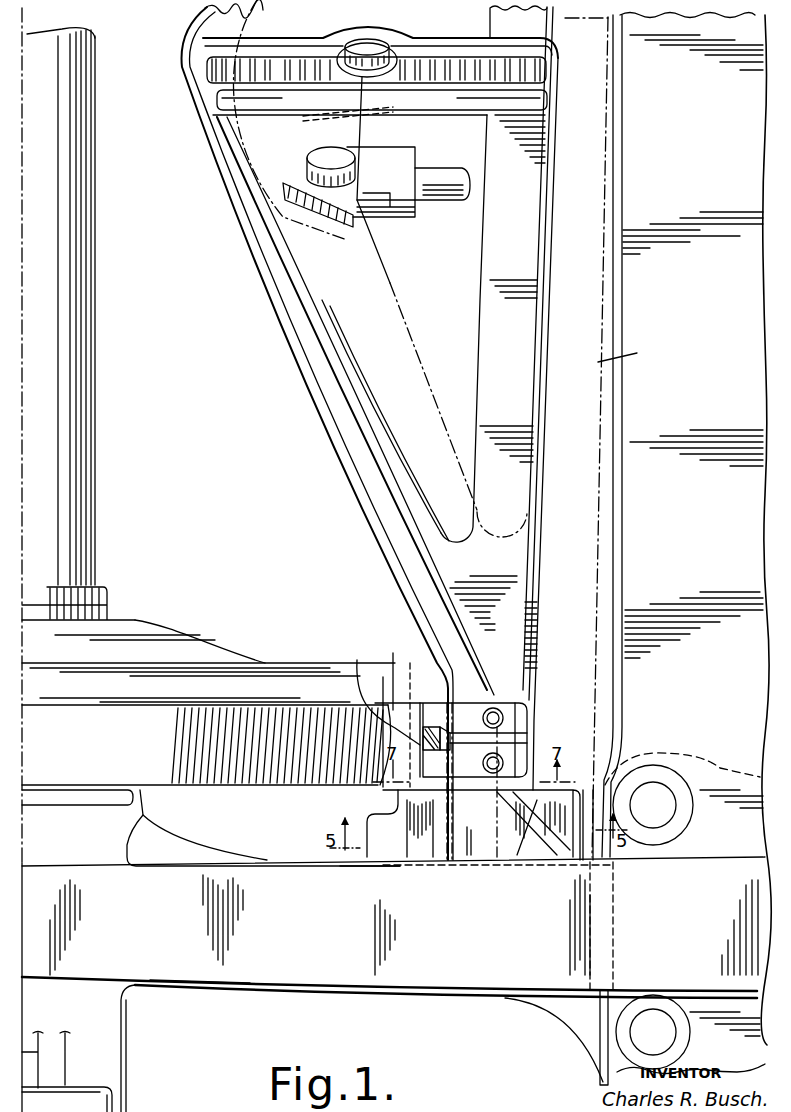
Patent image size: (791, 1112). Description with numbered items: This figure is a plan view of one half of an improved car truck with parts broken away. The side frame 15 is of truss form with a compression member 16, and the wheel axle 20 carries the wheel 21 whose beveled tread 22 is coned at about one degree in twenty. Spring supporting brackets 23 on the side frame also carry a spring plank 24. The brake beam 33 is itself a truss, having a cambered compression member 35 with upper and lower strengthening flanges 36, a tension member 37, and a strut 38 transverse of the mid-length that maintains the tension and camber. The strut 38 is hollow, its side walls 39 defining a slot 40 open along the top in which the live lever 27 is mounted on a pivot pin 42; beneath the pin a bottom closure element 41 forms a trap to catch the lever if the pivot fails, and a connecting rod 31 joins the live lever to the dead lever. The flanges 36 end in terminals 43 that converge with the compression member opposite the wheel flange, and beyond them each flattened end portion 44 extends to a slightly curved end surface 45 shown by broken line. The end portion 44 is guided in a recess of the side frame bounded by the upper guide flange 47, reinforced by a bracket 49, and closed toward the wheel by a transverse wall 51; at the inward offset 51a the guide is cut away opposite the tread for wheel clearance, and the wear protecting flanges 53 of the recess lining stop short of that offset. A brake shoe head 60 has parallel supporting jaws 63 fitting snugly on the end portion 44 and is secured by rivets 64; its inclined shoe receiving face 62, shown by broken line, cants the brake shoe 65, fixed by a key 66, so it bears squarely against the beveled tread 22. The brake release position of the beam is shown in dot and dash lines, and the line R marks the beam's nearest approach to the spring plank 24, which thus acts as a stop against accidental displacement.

The side frame 15 is at (253, 1000).
The compression member 16 is at (330, 968).
The wheel axle 20 is at (96, 280).
The wheel 21 is at (180, 643).
The beveled tread 22 is at (223, 772).
The spring supporting bracket 23 is at (722, 775).
The spring plank 24 is at (737, 401).
The live lever 27 is at (318, 213).
The connecting rod 31 is at (454, 194).
The brake beam 33 is at (278, 318).
The compression member 35 is at (490, 320).
The strengthening flange 36 is at (550, 354).
The tension member 37 is at (300, 361).
The strut 38 is at (440, 28).
The side wall 39 is at (437, 90).
The slot 40 is at (292, 98).
The bottom closure element 41 is at (363, 30).
The pivot pin 42 is at (371, 40).
The terminal 43 is at (538, 660).
The end portion 44 is at (533, 720).
The end surface 45 is at (487, 860).
The upper guide flange 47 is at (423, 840).
The reinforcing bracket 49 is at (553, 838).
The transverse wall 51 is at (367, 860).
The inward offset 51a is at (376, 823).
The wear protecting flange 53 is at (465, 783).
The brake shoe head 60 is at (430, 703).
The inclined shoe receiving face 62 is at (417, 715).
The supporting jaw 63 is at (512, 714).
The rivet 64 is at (487, 714).
The brake shoe 65 is at (390, 707).
The key 66 is at (382, 691).
The line R is at (624, 360).